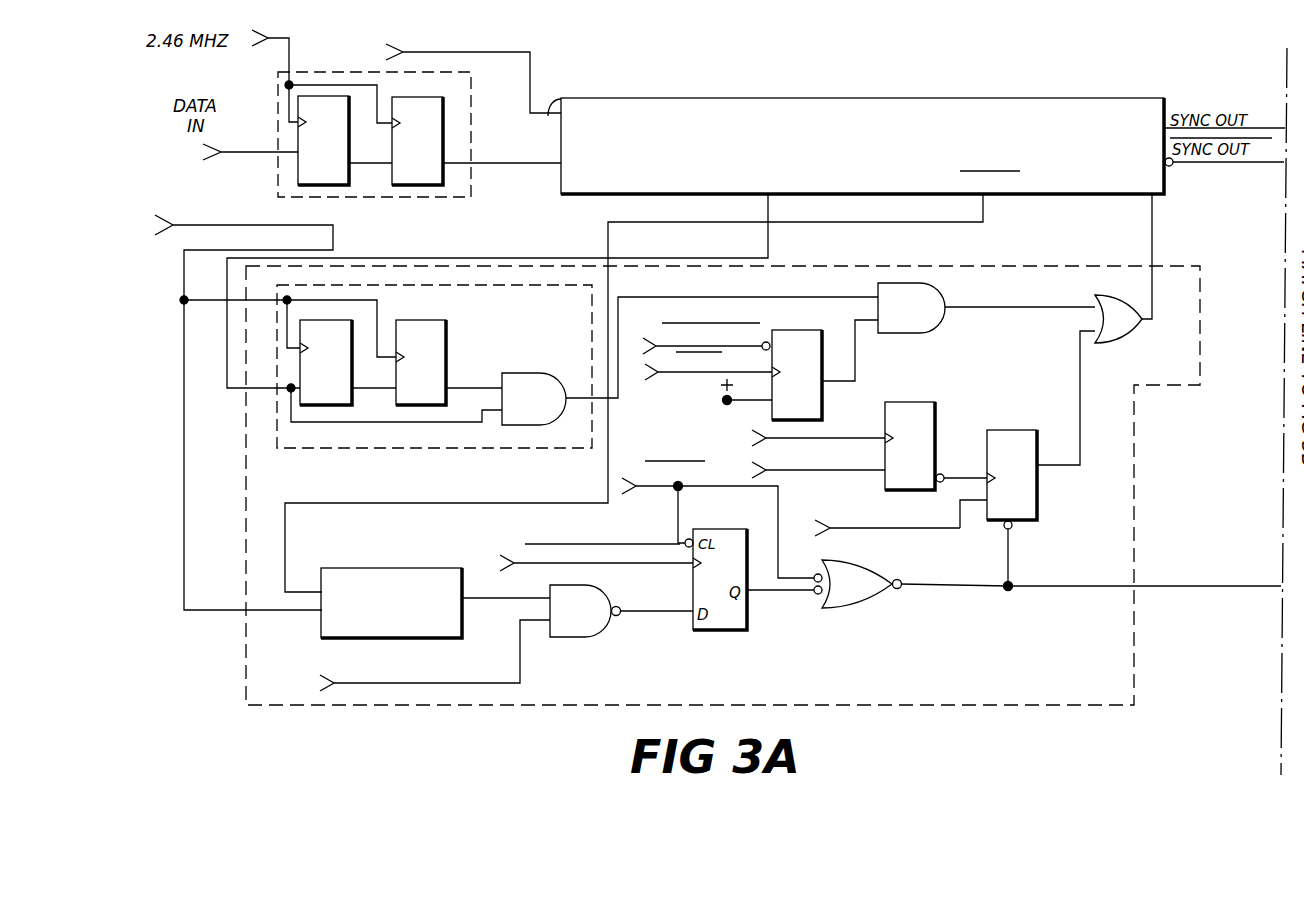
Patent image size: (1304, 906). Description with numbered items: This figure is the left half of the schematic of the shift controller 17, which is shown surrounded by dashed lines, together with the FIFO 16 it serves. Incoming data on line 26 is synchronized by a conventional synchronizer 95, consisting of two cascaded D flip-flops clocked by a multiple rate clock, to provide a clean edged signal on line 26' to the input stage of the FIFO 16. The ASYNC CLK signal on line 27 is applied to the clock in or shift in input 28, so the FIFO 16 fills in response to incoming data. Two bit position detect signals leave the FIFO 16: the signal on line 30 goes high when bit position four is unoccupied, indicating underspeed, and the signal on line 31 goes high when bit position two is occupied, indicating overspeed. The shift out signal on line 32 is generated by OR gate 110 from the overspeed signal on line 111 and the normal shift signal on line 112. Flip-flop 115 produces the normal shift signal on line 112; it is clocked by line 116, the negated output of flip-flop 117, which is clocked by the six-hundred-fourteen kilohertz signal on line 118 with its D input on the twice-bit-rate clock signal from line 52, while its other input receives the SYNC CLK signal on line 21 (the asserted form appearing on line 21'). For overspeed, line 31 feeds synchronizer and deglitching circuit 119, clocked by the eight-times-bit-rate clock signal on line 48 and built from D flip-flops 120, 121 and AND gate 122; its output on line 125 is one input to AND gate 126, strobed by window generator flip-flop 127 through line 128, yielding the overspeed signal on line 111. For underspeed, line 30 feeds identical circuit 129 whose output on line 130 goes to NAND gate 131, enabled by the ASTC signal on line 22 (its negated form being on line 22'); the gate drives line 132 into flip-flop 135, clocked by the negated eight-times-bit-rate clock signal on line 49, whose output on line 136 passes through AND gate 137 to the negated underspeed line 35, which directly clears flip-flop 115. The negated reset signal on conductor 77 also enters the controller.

The FIFO 16 is at (766, 98).
The shift controller 17 is at (723, 499).
The SYNC CLK signal line 21 is at (896, 538).
The SYNC CLK signal line (asserted form) 21' is at (694, 330).
The ASTC signal line 22 is at (435, 655).
The negated ASTC signal line 22' is at (703, 383).
The incoming data line 26 is at (250, 142).
The synchronized data line 26' is at (502, 180).
The asynchronous clock output line 27 is at (531, 78).
The clock in (shift in) input 28 is at (558, 112).
The bit 4 position detect line 30 is at (985, 208).
The bit 2 position detect line 31 is at (770, 206).
The shift out signal line 32 is at (1151, 212).
The negated underspeed signal line 35 is at (1155, 586).
The ASBITRATE X 8 signal line 48 is at (335, 242).
The negated ASBITRATE X 8 signal line 49 is at (530, 565).
The ASBITRATE X 2 signal line 52 is at (875, 473).
The negated reset conductor 77 is at (670, 488).
The synchronizer 95 is at (475, 108).
The OR gate 110 is at (1111, 340).
The overspeed signal line 111 is at (1000, 308).
The normal shift signal line 112 is at (1080, 352).
The flip-flop 115 is at (992, 430).
The flip-flop 117 negated output line 116 is at (949, 477).
The flip-flop 117 is at (912, 402).
The 614.4 kilohertz clock signal line 118 is at (753, 441).
The synchronizer and deglitching circuit 119 is at (465, 449).
The D flip-flop 120 is at (318, 320).
The D flip-flop 121 is at (426, 320).
The AND gate 122 is at (512, 373).
The synchronizer and deglitcher output line 125 is at (613, 400).
The AND gate 126 is at (878, 291).
The flip-flop (window generator) 127 is at (792, 330).
The window generator output line 128 is at (856, 359).
The synchronization and deglitching circuit 129 is at (419, 568).
The synchronizer 129 output line 130 is at (511, 599).
The NAND gate 131 is at (568, 639).
The NAND gate output line 132 is at (645, 613).
The flip-flop 135 is at (750, 598).
The flip-flop 135 output line 136 is at (828, 608).
The AND gate 137 is at (906, 578).